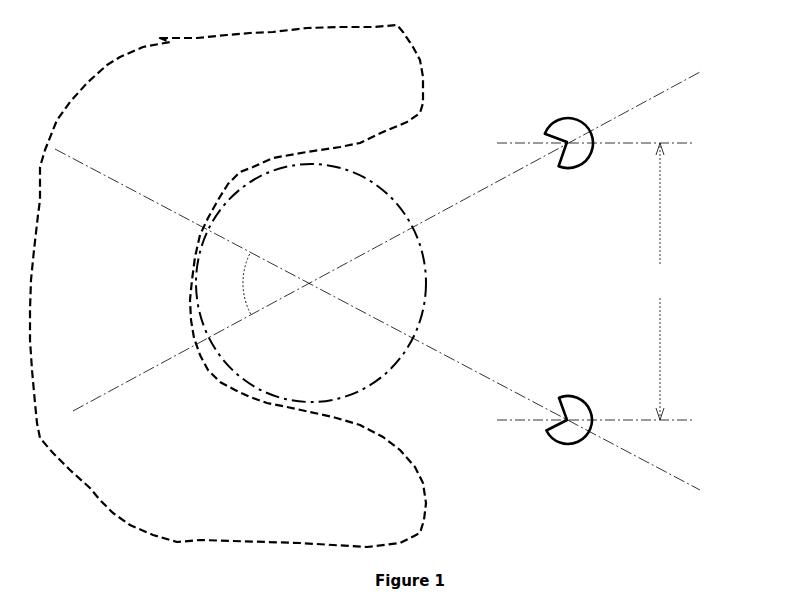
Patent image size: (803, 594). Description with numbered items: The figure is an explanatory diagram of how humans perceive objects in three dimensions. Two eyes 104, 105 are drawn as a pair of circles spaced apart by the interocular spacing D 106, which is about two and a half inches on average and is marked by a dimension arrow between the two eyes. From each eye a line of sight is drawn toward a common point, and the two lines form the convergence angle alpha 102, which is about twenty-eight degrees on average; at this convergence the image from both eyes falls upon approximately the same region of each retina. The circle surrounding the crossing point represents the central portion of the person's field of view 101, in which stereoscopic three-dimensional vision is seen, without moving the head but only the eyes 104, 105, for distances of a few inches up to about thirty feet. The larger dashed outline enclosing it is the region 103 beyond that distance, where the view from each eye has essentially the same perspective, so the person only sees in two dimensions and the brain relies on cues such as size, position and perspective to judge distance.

The central portion of a person's field of view 101 is at (427, 297).
The convergence angle α 102 is at (245, 283).
The 2-D region 103 is at (35, 270).
The eye 104 is at (560, 117).
The eye 105 is at (563, 448).
The interocular spacing D 106 is at (667, 275).